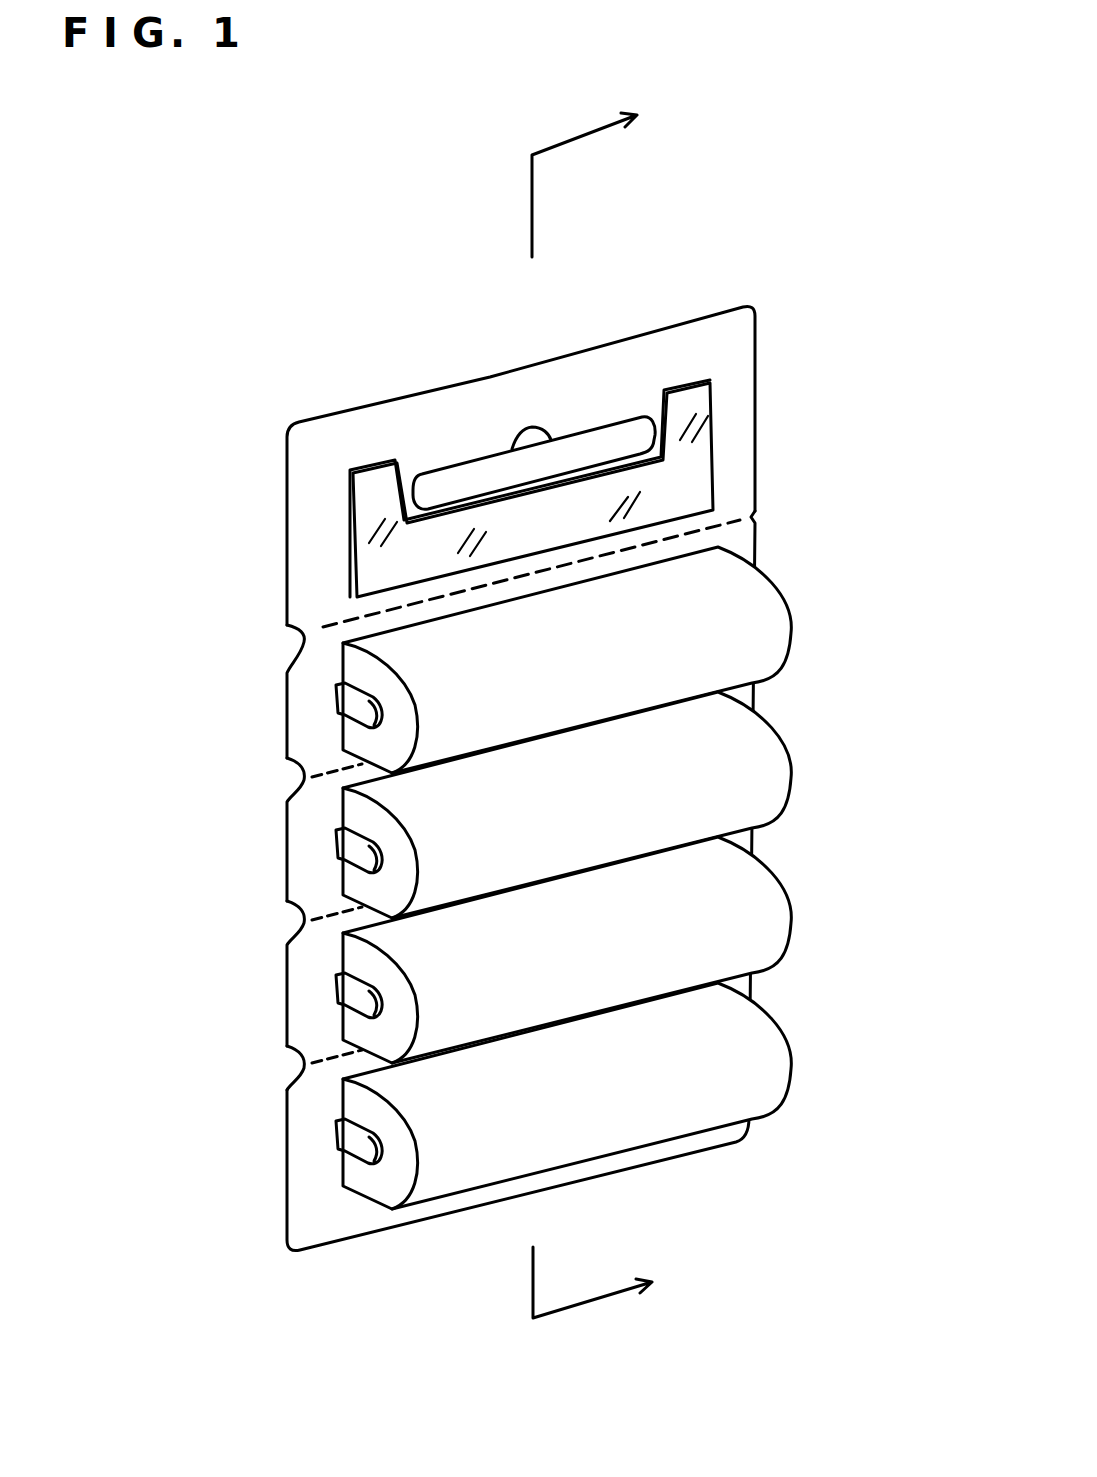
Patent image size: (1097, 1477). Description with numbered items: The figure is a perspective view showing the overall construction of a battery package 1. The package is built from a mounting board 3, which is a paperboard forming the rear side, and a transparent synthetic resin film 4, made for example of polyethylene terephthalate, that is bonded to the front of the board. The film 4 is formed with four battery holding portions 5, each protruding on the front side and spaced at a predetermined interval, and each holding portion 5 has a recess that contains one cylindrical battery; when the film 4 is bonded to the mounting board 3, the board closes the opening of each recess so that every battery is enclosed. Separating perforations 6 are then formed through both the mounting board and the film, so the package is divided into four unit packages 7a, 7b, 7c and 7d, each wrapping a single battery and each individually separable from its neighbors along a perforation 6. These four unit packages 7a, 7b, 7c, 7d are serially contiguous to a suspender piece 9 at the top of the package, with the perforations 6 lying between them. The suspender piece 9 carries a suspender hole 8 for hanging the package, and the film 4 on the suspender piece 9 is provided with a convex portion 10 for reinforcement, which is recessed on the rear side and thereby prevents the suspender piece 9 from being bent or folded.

The battery package 1 is at (608, 298).
The mounting board 3 is at (338, 413).
The transparent synthetic resin film 4 is at (742, 538).
The battery holding portion 5 is at (740, 627).
The separating perforation 6 is at (323, 777).
The unit package 7a is at (317, 673).
The unit package 7b is at (313, 893).
The unit package 7c is at (303, 1017).
The unit package 7d is at (313, 1210).
The suspender hole 8 is at (481, 477).
The suspender piece 9 is at (735, 363).
The convex portion 10 is at (693, 480).